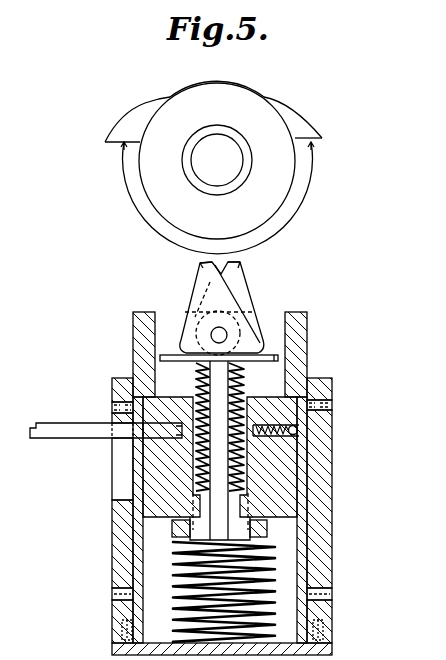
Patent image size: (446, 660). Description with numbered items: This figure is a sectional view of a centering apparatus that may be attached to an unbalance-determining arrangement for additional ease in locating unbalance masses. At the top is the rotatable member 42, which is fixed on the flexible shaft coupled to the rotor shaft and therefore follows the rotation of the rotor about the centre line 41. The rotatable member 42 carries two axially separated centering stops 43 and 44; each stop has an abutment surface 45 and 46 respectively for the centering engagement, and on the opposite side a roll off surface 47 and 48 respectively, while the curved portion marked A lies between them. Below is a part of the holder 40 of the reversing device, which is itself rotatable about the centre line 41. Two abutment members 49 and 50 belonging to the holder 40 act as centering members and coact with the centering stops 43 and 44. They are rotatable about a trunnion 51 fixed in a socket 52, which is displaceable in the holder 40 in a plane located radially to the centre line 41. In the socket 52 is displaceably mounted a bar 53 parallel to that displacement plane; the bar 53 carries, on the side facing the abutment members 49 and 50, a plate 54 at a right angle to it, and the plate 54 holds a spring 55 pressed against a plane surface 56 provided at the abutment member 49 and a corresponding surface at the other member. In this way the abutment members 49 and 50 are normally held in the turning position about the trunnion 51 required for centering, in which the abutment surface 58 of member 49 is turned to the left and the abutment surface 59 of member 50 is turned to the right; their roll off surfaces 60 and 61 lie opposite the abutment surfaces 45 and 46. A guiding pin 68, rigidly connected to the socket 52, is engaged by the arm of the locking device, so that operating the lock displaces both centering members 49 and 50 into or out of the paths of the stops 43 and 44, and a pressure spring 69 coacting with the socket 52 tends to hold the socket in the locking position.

The holder 40 is at (333, 482).
The centre line 41 is at (207, 150).
The rotatable member 42 is at (231, 83).
The centering stop 43 is at (125, 125).
The centering stop 44 is at (318, 124).
The abutment surface 45 is at (122, 146).
The abutment surface 46 is at (313, 145).
The roll off surface 47 is at (136, 106).
The roll off surface 48 is at (293, 105).
The arc segment A is at (305, 203).
The abutment member 49 is at (203, 283).
The abutment member 50 is at (235, 290).
The trunnion 51 is at (226, 336).
The socket 52 is at (278, 358).
The bar 53 is at (223, 445).
The plate 54 is at (296, 352).
The spring 55 is at (190, 460).
The plane surface 56 is at (170, 353).
The abutment surface 58 is at (198, 273).
The abutment surface 59 is at (243, 278).
The roll off surface 60 is at (200, 258).
The roll off surface 61 is at (237, 259).
The guiding pin 68 is at (100, 424).
The pressure spring 69 is at (275, 560).